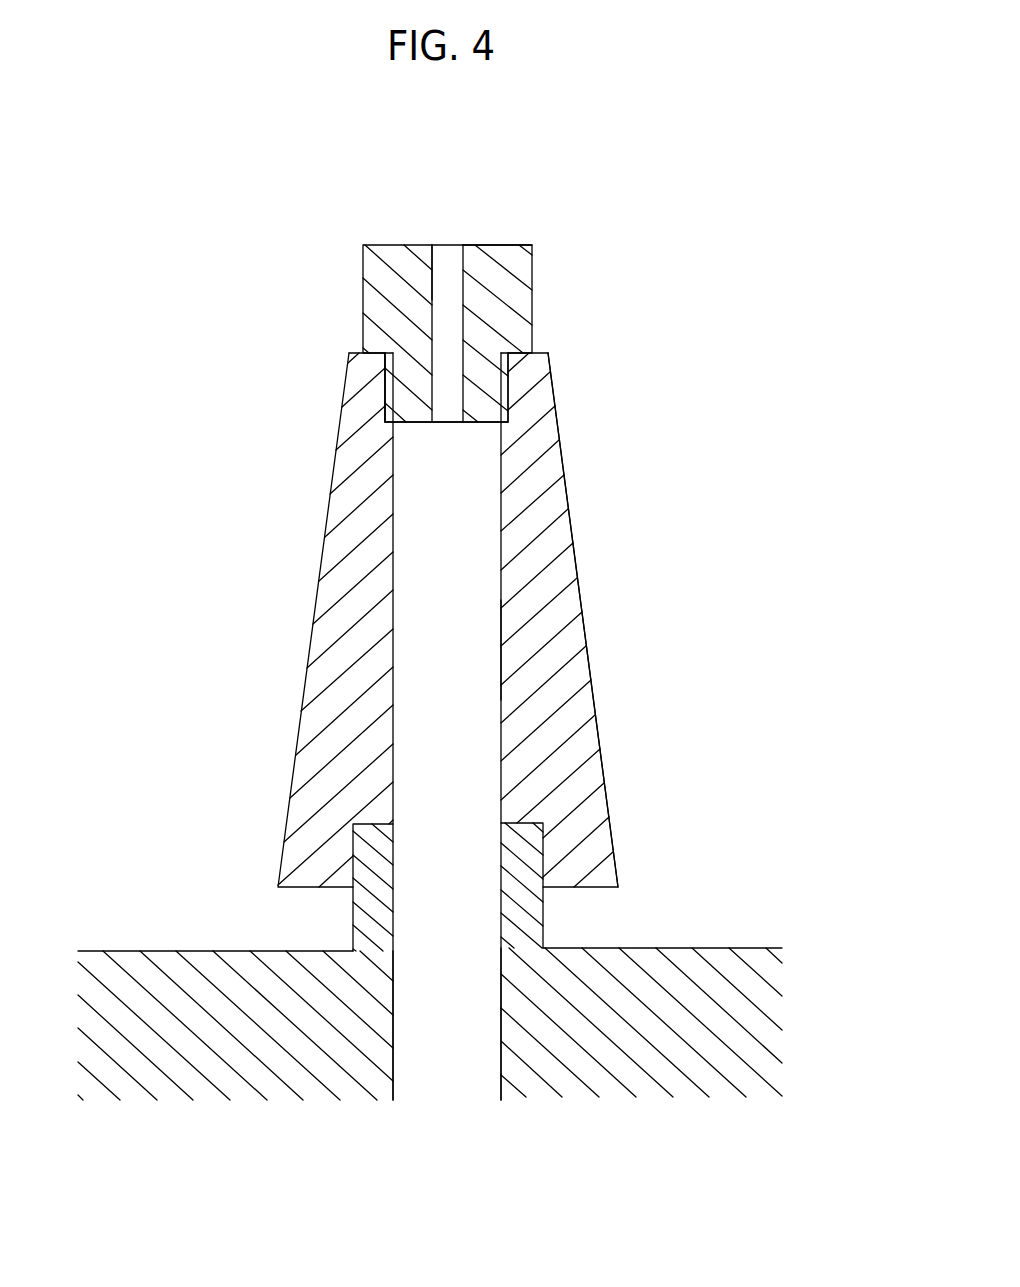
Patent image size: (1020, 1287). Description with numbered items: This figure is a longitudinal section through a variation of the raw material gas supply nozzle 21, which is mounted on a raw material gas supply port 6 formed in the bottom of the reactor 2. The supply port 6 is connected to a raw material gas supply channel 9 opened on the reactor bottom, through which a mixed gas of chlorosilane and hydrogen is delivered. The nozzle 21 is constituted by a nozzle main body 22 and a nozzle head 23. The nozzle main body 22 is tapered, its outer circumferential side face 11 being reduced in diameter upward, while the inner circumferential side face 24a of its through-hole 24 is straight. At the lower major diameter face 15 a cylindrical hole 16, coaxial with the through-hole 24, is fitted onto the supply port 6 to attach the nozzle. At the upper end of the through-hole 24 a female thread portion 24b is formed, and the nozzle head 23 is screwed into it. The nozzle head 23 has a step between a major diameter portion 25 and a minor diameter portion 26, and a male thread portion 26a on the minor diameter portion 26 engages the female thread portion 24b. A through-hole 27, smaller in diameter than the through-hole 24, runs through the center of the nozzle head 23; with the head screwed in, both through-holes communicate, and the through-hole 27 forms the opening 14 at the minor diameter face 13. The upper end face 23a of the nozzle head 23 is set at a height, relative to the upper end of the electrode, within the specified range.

The reactor 2 is at (710, 948).
The raw material gas supply port 6 is at (353, 915).
The raw material gas supply channel 9 is at (393, 1030).
The outer circumferential side face 11 is at (557, 407).
The minor diameter face 13 is at (548, 353).
The opening 14 is at (449, 240).
The major diameter face 15 is at (570, 888).
The cylindrical hole 16 is at (355, 838).
The raw material gas supply nozzle 21 is at (611, 270).
The nozzle main body 22 is at (309, 560).
The nozzle head 23 is at (360, 258).
The upper end face 23a is at (502, 245).
The through-hole 24 is at (460, 577).
The inner circumferential side face 24a is at (501, 632).
The female thread portion 24b is at (497, 398).
The major diameter portion 25 is at (380, 296).
The minor diameter portion 26 is at (410, 400).
The male thread portion 26a is at (385, 390).
The through-hole 27 is at (441, 245).